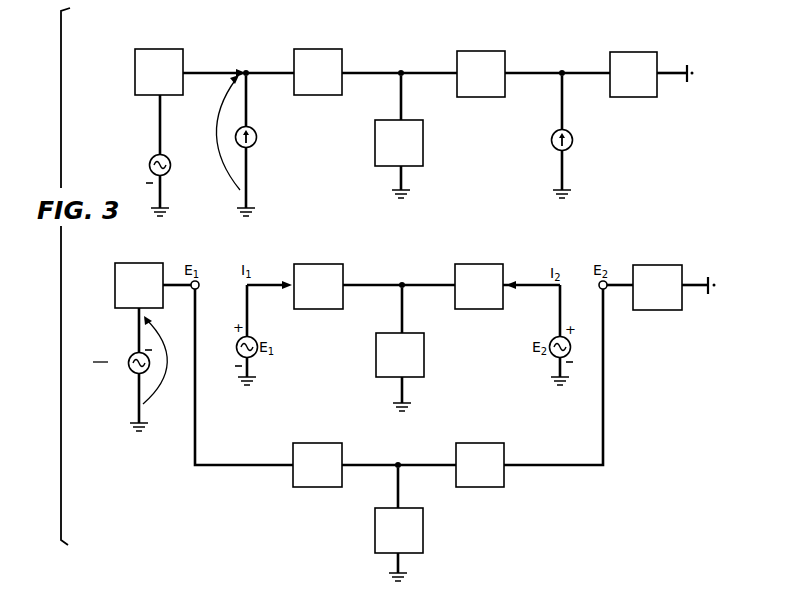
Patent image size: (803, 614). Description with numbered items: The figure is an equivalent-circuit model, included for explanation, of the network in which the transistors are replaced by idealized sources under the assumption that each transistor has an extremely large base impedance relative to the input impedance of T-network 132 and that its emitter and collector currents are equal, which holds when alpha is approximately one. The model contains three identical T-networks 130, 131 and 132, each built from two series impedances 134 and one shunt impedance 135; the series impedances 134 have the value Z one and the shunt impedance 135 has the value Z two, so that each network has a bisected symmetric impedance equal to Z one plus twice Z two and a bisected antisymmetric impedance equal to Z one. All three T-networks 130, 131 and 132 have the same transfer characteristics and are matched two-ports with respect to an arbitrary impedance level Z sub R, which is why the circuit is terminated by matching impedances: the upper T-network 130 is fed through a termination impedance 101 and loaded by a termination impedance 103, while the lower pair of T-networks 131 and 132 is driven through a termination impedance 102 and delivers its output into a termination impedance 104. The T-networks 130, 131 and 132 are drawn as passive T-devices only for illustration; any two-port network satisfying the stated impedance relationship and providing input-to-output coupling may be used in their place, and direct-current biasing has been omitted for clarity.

The termination impedance Z_R 101 is at (167, 52).
The termination impedance Z_R 102 is at (114, 285).
The termination impedance Z_R 103 is at (641, 55).
The termination impedance Z_R 104 is at (656, 311).
The T-network 130 is at (485, 202).
The T-network 131 is at (486, 395).
The T-network 132 is at (487, 540).
The series impedance 134 is at (327, 52).
The shunt impedance 135 is at (421, 146).